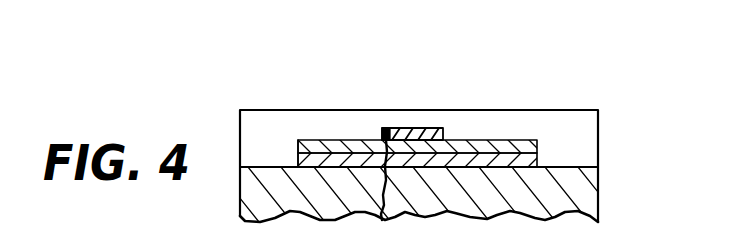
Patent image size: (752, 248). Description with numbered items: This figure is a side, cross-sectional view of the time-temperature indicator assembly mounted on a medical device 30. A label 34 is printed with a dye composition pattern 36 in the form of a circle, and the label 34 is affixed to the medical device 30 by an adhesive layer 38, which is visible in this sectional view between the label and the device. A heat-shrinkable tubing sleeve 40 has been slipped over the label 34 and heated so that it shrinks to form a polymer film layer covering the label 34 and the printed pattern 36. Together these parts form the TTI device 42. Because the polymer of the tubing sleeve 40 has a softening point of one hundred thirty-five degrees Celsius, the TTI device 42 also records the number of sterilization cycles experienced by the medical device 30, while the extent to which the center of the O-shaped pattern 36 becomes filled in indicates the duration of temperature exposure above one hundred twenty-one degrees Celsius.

The medical device 30 is at (563, 193).
The label 34 is at (540, 140).
The dye composition pattern 36 is at (407, 128).
The adhesive layer 38 is at (537, 158).
The heat-shrinkable tubing sleeve 40 is at (543, 122).
The TTI device 42 is at (298, 139).